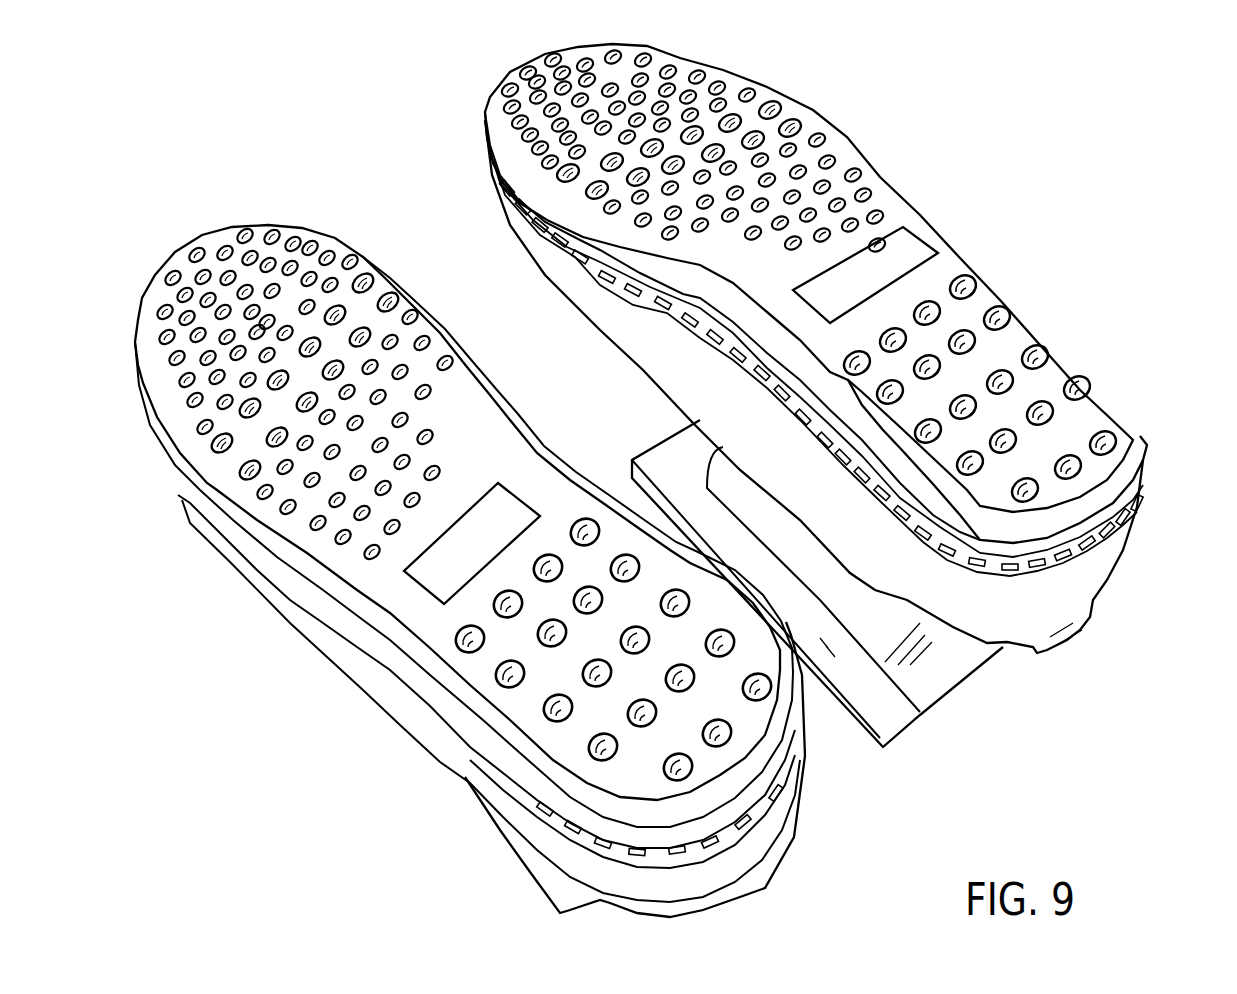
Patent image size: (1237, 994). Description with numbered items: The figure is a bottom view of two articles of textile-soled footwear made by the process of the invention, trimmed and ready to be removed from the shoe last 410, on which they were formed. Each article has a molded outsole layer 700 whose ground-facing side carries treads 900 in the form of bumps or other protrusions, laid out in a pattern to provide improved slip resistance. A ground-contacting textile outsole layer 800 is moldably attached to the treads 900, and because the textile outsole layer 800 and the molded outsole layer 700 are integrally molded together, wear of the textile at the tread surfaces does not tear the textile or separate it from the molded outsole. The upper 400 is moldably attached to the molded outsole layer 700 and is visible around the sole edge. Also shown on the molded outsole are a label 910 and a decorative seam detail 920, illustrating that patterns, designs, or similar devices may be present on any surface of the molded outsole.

The upper 400 is at (1113, 555).
The shoe last 410 is at (963, 697).
The molded outsole layer 700 is at (1144, 456).
The textile outsole layer 800 is at (1030, 323).
The treads 900 is at (877, 187).
The label 910 is at (920, 237).
The decorative seam detail 920 is at (505, 188).